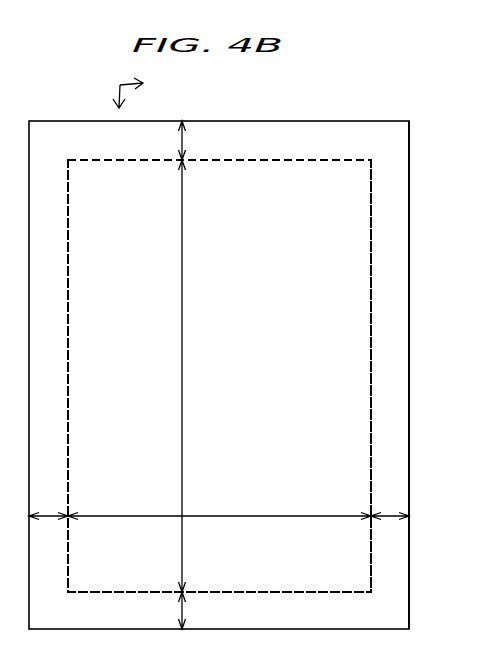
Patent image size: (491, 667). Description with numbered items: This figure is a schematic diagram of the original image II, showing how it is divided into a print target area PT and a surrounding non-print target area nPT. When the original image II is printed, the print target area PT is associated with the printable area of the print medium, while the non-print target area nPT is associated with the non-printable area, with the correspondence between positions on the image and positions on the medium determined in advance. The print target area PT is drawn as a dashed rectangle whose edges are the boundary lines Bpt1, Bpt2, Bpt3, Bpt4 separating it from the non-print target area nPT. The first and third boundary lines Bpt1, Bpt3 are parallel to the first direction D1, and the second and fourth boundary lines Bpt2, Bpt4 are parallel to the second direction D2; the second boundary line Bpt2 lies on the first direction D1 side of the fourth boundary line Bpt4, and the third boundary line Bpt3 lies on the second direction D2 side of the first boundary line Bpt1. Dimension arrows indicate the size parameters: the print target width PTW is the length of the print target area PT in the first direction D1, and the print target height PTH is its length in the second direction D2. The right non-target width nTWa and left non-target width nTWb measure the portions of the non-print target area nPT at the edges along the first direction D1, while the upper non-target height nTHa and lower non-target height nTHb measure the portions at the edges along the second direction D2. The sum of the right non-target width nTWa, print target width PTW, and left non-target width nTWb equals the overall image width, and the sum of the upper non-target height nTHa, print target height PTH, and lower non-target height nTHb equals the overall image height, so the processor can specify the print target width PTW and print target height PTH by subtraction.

The non-print target area nPT is at (233, 133).
The original image II is at (362, 121).
The print target area PT is at (333, 172).
The first boundary line Bpt1 is at (232, 160).
The second boundary line Bpt2 is at (371, 323).
The third boundary line Bpt3 is at (230, 593).
The fourth boundary line Bpt4 is at (68, 323).
The upper non-target height nTHa is at (154, 140).
The lower non-target height nTHb is at (154, 610).
The print target height PTH is at (201, 376).
The print target width PTW is at (219, 505).
The right non-target width nTWa is at (390, 487).
The left non-target width nTWb is at (48, 487).
The first direction D1 is at (149, 81).
The second direction D2 is at (96, 96).